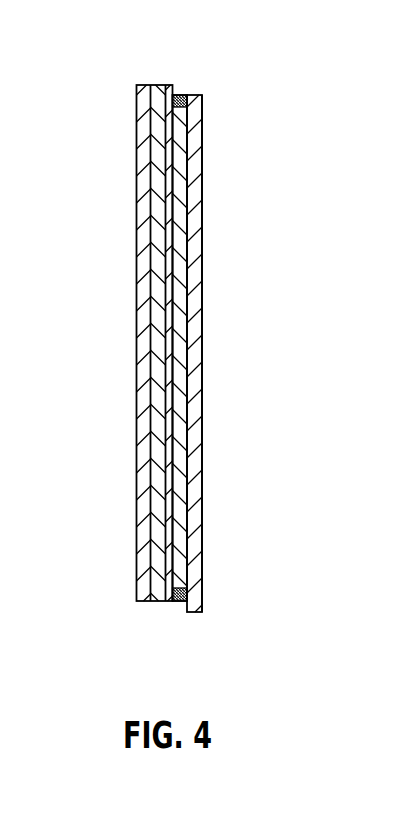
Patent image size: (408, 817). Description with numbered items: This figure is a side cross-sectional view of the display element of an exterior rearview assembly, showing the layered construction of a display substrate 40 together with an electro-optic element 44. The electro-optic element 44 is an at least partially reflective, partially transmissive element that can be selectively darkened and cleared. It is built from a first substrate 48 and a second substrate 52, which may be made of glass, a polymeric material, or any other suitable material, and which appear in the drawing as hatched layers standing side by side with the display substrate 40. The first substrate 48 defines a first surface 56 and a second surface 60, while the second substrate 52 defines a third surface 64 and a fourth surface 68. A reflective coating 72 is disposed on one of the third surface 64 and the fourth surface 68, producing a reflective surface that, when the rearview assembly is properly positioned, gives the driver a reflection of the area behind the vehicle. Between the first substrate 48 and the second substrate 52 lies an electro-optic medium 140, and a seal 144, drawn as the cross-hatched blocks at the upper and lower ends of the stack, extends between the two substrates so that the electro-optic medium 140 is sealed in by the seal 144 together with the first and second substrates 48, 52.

The display substrate 40 is at (145, 328).
The electro-optic element 44 is at (200, 92).
The first substrate 48 is at (192, 170).
The second substrate 52 is at (157, 130).
The first surface 56 is at (196, 258).
The second surface 60 is at (192, 345).
The third surface 64 is at (150, 252).
The fourth surface 68 is at (147, 412).
The reflective coating 72 is at (147, 190).
The electro-optic medium 140 is at (192, 462).
The seal 144 is at (190, 97).